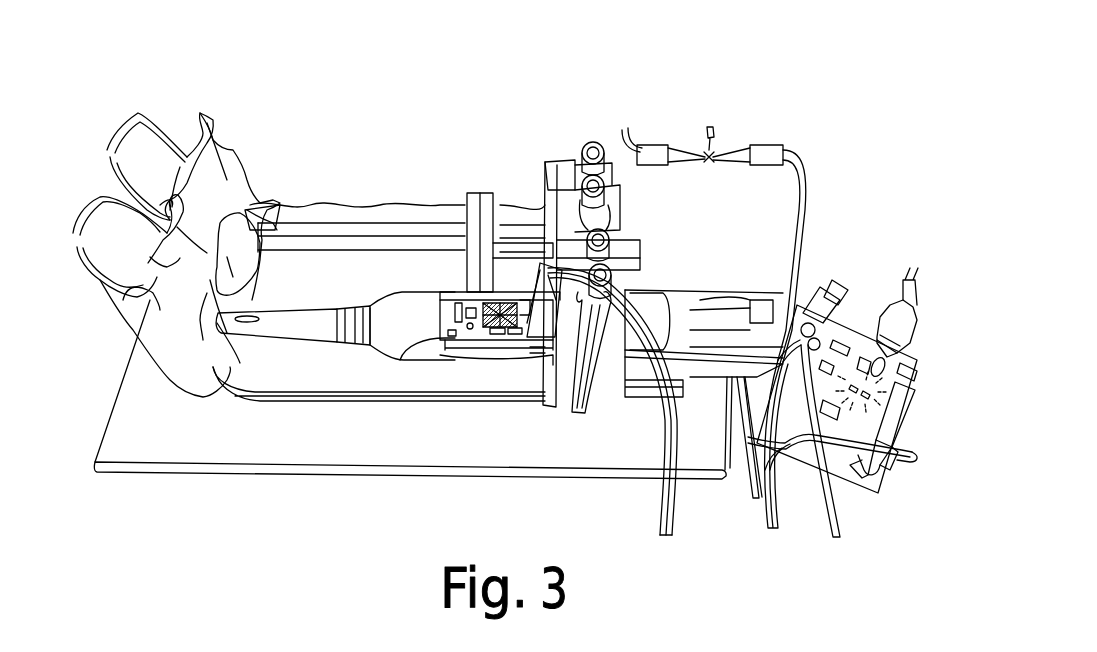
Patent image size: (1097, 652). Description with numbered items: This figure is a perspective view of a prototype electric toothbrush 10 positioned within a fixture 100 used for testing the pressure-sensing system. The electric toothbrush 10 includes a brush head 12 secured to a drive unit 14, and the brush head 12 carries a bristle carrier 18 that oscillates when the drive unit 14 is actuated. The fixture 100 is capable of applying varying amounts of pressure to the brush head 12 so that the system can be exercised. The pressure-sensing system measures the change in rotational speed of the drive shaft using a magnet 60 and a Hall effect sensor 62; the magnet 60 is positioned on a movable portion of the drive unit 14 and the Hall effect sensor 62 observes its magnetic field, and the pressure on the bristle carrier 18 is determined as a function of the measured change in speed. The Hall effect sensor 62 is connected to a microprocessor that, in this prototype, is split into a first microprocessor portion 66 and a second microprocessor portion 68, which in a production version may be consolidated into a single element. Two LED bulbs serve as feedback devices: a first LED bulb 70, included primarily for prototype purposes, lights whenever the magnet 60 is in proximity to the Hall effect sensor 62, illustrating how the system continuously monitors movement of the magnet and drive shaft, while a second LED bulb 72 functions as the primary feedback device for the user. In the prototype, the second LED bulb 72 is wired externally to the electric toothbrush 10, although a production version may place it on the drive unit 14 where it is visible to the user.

The electric toothbrush 10 is at (312, 497).
The brush head 12 is at (292, 330).
The drive unit 14 is at (650, 368).
The bristle carrier 18 is at (226, 335).
The magnet 60 is at (460, 330).
The Hall effect sensor 62 is at (467, 318).
The first microprocessor portion 66 is at (530, 340).
The second microprocessor portion 68 is at (850, 335).
The first LED bulb 70 is at (497, 338).
The second LED bulb 72 is at (708, 127).
The fixture 100 is at (677, 268).